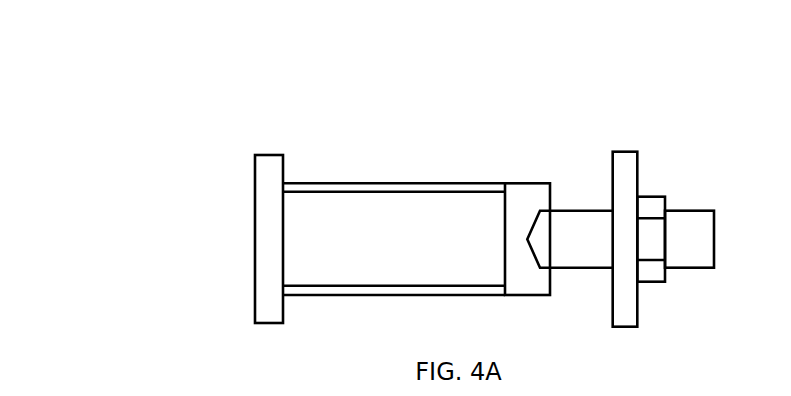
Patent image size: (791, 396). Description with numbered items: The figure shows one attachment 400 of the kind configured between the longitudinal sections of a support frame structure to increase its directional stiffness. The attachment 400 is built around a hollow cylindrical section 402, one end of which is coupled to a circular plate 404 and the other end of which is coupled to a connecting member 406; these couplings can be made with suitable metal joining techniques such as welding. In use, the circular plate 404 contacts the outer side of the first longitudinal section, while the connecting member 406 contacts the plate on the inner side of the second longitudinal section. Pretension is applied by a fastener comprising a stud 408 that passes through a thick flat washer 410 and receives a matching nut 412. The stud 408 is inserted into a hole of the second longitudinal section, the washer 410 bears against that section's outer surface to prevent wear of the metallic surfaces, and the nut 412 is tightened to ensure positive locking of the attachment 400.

The attachment 400 is at (109, 50).
The hollow cylindrical section 402 is at (373, 203).
The circular plate 404 is at (265, 193).
The connecting member 406 is at (527, 198).
The stud 408 is at (575, 230).
The thick flat washer 410 is at (625, 170).
The nut 412 is at (655, 237).